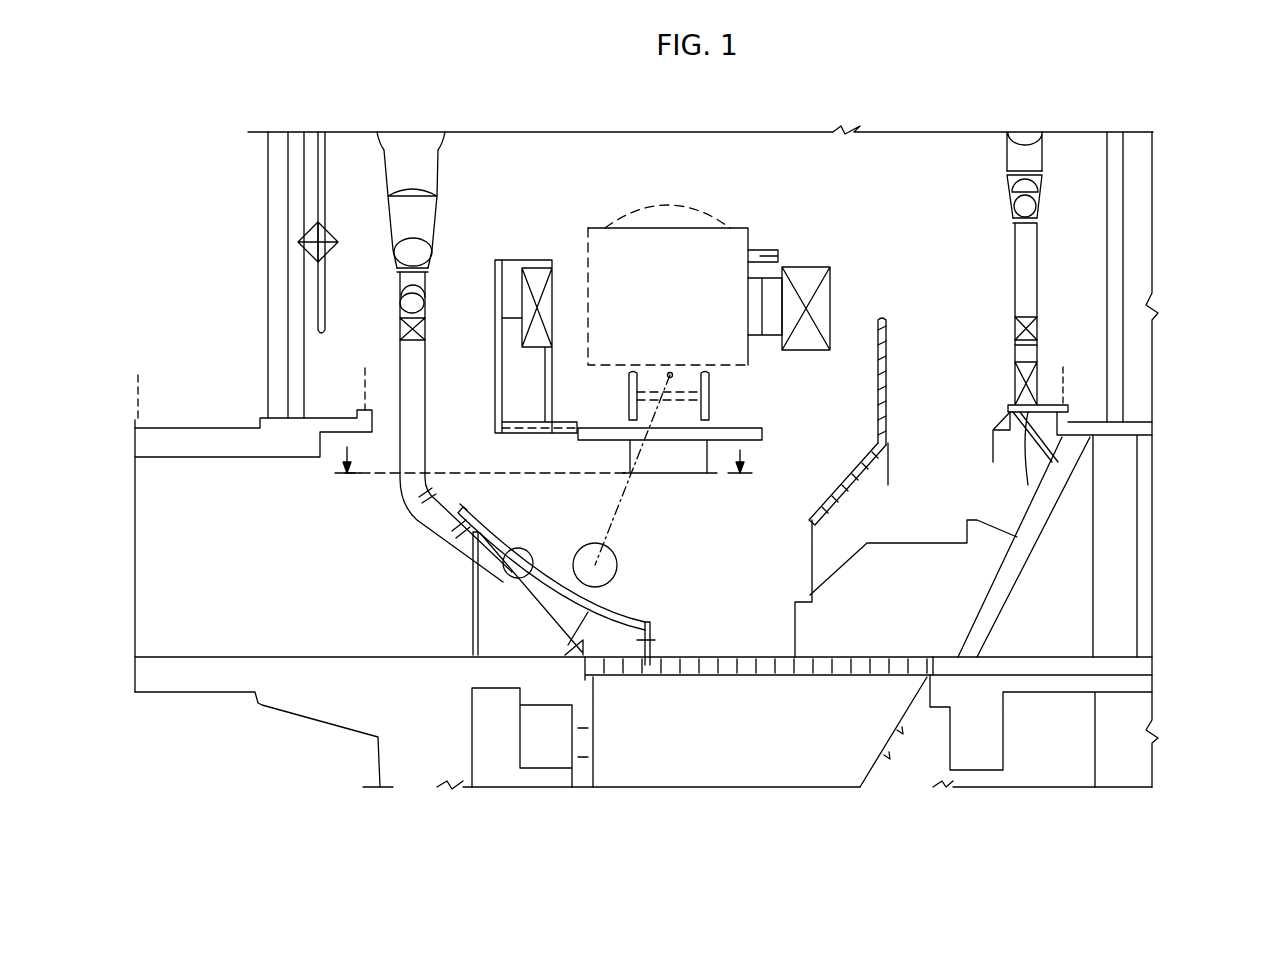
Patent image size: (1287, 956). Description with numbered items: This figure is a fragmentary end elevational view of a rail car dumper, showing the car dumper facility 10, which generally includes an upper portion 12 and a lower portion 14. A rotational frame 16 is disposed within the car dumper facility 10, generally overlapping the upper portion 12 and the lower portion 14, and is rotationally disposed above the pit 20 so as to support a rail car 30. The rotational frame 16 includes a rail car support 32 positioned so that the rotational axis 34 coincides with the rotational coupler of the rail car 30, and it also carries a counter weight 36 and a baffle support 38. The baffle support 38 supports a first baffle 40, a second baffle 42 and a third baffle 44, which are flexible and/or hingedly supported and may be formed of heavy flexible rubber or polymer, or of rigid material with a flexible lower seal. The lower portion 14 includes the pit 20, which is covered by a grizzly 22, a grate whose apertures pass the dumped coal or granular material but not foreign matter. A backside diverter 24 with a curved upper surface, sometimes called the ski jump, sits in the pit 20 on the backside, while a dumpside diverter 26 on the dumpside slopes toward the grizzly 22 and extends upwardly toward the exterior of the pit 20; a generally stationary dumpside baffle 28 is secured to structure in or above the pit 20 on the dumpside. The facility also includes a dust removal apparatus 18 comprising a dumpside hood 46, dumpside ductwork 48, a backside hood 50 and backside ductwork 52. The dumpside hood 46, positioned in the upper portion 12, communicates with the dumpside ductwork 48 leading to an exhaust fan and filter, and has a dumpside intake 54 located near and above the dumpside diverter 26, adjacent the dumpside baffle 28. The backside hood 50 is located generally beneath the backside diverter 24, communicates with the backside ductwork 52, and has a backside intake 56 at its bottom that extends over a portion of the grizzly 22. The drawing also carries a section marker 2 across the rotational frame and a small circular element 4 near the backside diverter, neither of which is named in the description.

The car dumper facility 10 is at (992, 120).
The upper portion 12 is at (1152, 243).
The lower portion 14 is at (1140, 532).
The rotational frame 16 is at (752, 424).
The dust removal apparatus 18 is at (452, 184).
The pit 20 is at (705, 569).
The grizzly 22 is at (843, 678).
The backside diverter 24 is at (636, 620).
The dumpside diverter 26 is at (975, 613).
The dumpside baffle 28 is at (993, 455).
The rail car 30 is at (742, 228).
The rail car support 32 is at (762, 437).
The rotational axis 34 is at (672, 375).
The counter weight 36 is at (615, 553).
The baffle support 38 is at (889, 401).
The first baffle 40 is at (815, 558).
The second baffle 42 is at (891, 471).
The third baffle 44 is at (889, 353).
The dumpside hood 46 is at (1040, 370).
The dumpside ductwork 48 is at (1038, 307).
The backside hood 50 is at (532, 607).
The backside ductwork 52 is at (428, 433).
The dumpside intake 54 is at (1025, 478).
The backside intake 56 is at (652, 640).
The roller 4 is at (528, 550).
The section line 2- 2 is at (543, 475).